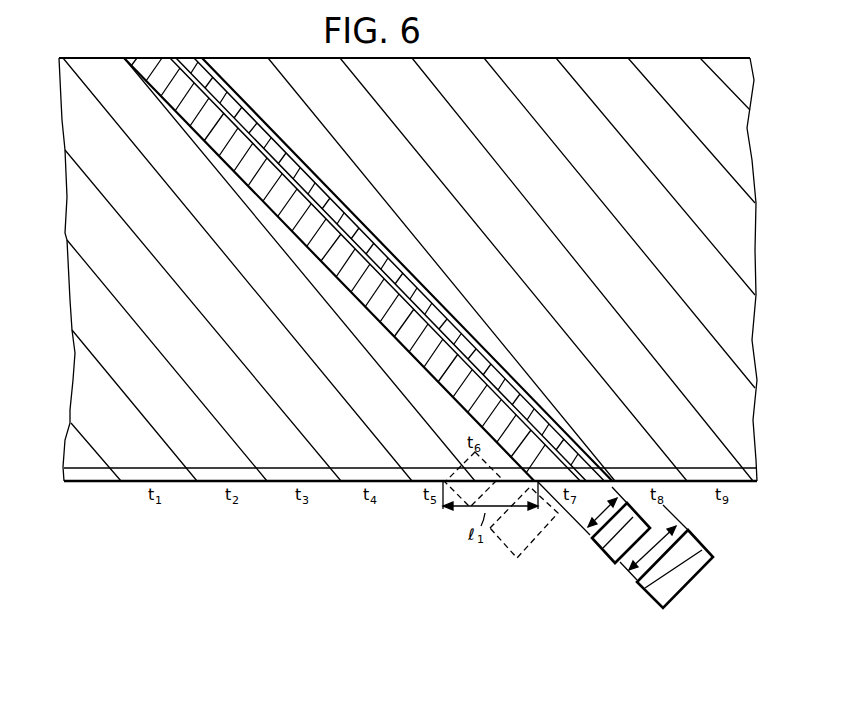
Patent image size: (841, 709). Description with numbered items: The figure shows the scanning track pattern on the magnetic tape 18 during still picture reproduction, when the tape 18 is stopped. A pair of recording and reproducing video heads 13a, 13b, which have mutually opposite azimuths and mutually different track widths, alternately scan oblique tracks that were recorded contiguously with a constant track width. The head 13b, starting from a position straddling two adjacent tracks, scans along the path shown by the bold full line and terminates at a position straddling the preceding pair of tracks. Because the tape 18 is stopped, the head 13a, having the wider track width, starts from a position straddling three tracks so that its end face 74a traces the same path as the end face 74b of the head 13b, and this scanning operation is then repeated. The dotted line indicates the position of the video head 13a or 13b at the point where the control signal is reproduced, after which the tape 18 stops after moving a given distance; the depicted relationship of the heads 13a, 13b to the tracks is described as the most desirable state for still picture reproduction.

The magnetic tape 18 is at (184, 54).
The video head 13a is at (690, 587).
The video head 13b is at (593, 545).
The end face 74a is at (517, 558).
The end face 74b is at (470, 507).